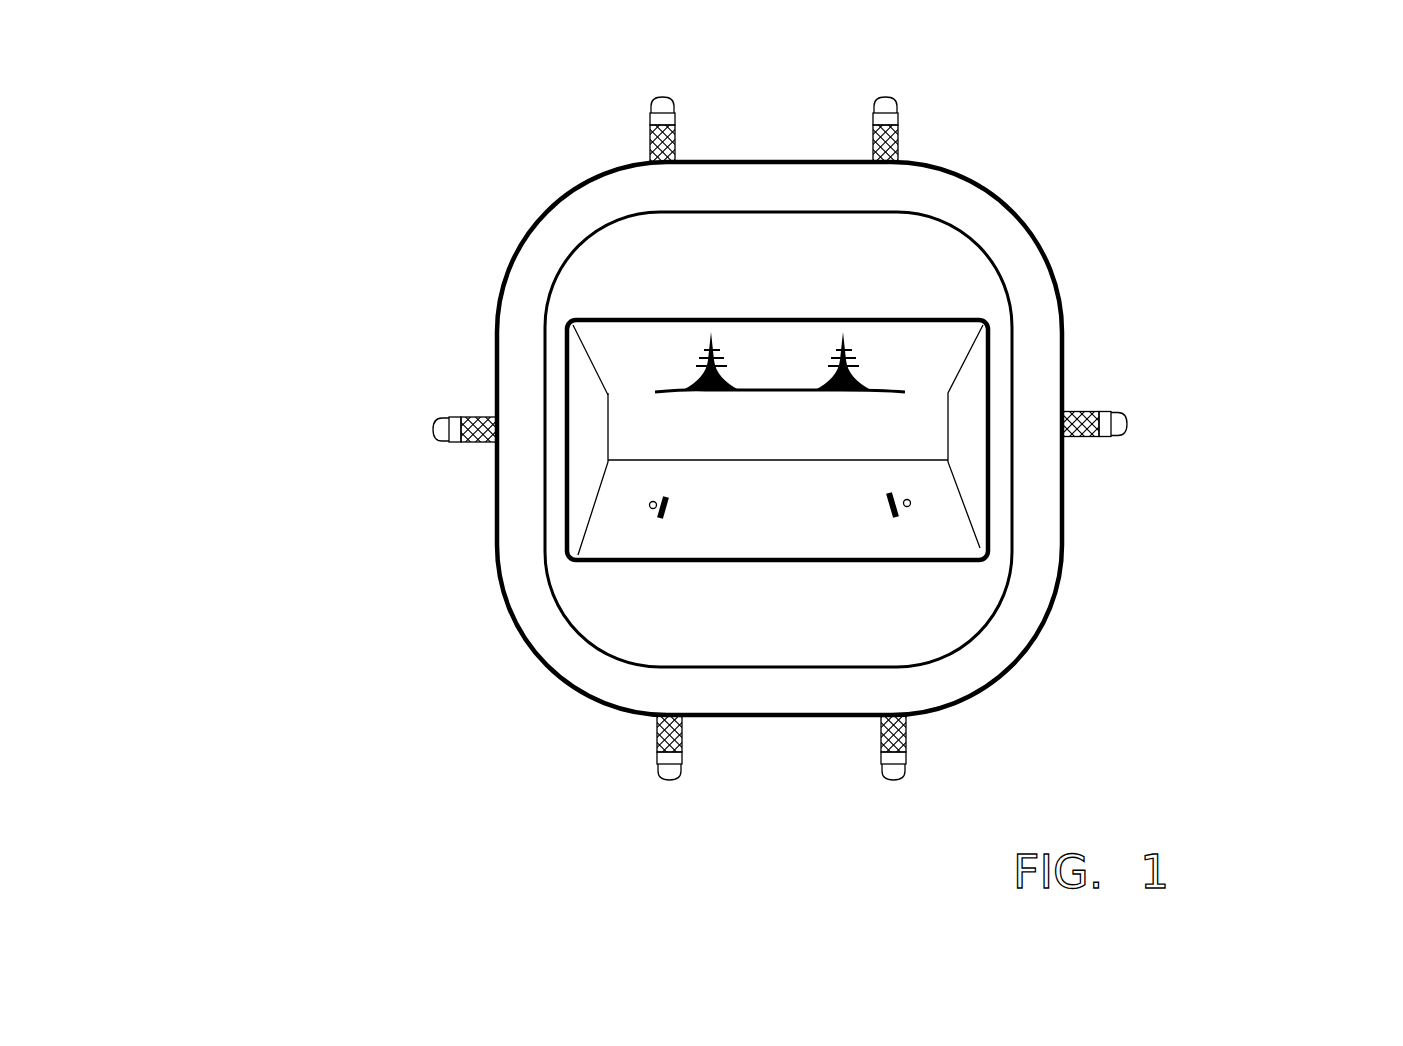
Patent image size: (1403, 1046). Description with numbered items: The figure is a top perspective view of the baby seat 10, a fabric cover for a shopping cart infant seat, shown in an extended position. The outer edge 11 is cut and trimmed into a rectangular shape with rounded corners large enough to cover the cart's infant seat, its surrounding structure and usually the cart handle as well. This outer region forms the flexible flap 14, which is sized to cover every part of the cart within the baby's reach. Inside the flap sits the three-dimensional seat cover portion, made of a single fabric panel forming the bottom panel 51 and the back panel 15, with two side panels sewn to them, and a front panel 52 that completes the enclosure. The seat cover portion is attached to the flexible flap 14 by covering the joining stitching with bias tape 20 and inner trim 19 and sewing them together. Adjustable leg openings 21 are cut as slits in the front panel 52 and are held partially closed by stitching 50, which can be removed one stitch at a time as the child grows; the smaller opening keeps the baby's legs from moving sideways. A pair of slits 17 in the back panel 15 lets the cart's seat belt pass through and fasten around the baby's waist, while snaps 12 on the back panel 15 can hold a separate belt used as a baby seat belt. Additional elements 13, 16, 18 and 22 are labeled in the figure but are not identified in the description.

The baby seat 10 is at (1070, 190).
The outer edge 11 is at (975, 178).
The snaps 12 is at (907, 503).
The side fastener 13 is at (1125, 415).
The flexible flap 14 is at (1028, 595).
The back panel 15 is at (835, 530).
The bottom wall 16 is at (782, 628).
The slits 17 is at (662, 520).
The ground line 18 is at (695, 384).
The inner trim 19 is at (563, 322).
The bias tape 20 is at (547, 302).
The adjustable leg openings 21 is at (840, 377).
The top fastener 22 is at (648, 122).
The stitching 50 is at (703, 350).
The bottom panel 51 is at (667, 438).
The front panel 52 is at (638, 350).